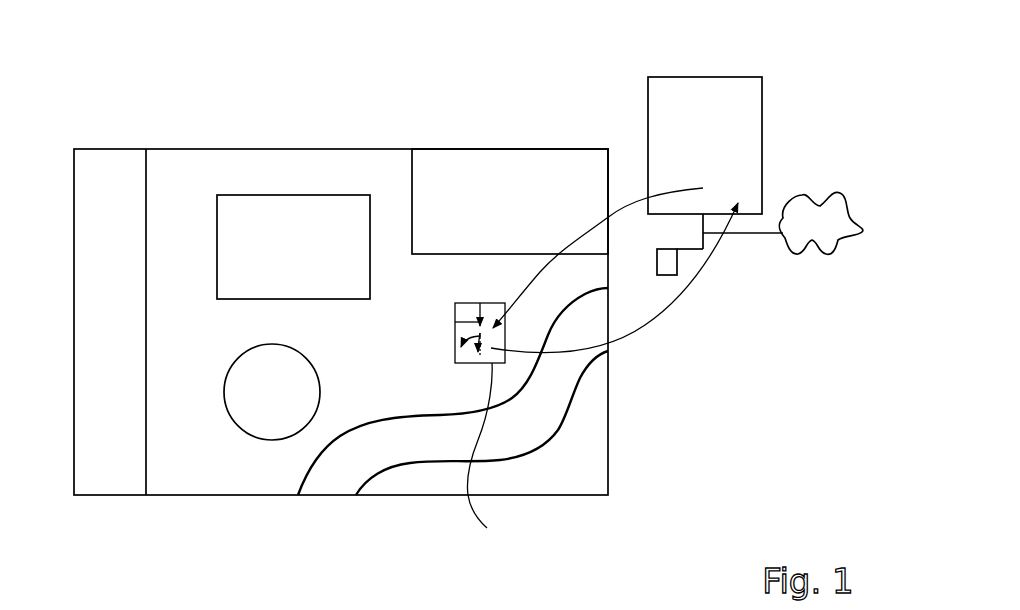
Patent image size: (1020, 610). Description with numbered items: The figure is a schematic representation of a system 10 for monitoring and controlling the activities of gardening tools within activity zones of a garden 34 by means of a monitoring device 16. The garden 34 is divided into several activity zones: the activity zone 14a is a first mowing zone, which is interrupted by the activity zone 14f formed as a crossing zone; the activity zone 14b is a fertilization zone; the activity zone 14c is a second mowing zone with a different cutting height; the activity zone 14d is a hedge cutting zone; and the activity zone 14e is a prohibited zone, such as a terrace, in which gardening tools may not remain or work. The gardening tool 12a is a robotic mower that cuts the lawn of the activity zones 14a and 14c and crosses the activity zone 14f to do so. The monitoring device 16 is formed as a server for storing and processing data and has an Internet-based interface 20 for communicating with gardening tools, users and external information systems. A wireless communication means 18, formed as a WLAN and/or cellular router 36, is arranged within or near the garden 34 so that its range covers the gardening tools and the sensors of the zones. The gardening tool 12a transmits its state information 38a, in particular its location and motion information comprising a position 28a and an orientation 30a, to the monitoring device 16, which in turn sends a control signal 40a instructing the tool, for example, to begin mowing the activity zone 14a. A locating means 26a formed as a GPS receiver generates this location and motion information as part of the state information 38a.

The system 10 is at (775, 52).
The gardening tool 12a is at (490, 303).
The activity zone 14a is at (403, 482).
The activity zone 14b is at (287, 195).
The activity zone 14c is at (228, 362).
The activity zone 14d is at (146, 200).
The activity zone 14e is at (450, 149).
The activity zone 14f is at (523, 430).
The monitoring device 16 is at (762, 135).
The wireless communication means 18 is at (638, 278).
The WLAN and/or cellular router 36 is at (678, 275).
The Internet-based interface 20 is at (706, 242).
The locating means 26a is at (466, 315).
The position 28a is at (489, 461).
The orientation 30a is at (455, 350).
The garden 34 is at (608, 495).
The state information 38a is at (661, 316).
The control signal 40a is at (626, 210).